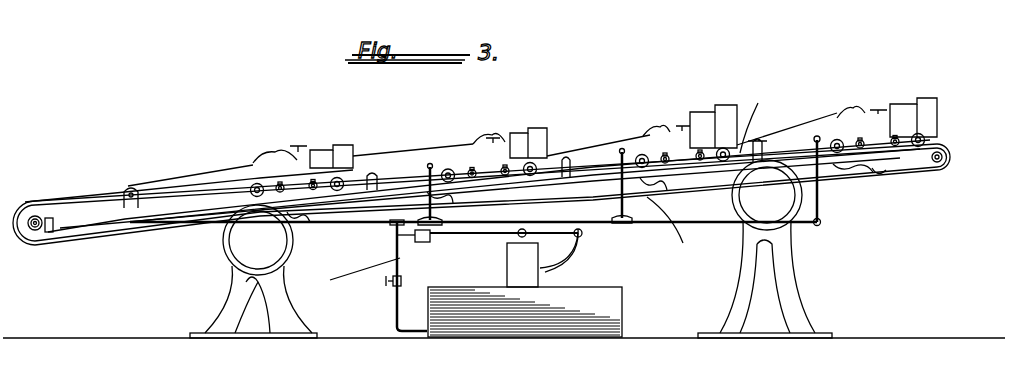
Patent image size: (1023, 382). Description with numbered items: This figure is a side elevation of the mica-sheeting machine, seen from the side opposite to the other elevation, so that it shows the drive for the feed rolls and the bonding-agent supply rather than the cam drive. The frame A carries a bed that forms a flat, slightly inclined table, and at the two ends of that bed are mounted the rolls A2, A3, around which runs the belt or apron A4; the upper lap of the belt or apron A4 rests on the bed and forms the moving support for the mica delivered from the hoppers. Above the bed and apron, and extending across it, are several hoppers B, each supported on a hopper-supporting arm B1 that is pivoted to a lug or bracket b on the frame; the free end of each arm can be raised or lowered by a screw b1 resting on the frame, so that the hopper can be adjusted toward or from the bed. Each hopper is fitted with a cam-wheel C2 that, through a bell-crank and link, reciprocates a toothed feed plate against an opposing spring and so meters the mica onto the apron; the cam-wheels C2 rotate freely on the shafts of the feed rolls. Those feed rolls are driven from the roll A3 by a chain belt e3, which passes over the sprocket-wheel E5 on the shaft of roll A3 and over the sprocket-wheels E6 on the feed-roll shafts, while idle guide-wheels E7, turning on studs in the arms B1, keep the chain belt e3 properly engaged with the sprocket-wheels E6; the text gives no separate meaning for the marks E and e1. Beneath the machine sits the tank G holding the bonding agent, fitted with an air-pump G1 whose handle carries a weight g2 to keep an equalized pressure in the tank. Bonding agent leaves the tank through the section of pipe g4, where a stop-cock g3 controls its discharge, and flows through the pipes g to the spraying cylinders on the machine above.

The frame A is at (210, 208).
The roll A2 is at (936, 164).
The roll A3 is at (50, 232).
The belt or apron A4 is at (708, 170).
The hopper B is at (340, 146).
The hopper-supporting arm B1 is at (186, 176).
The cam-wheel C2 is at (268, 152).
The lug or bracket b is at (132, 188).
The screw b1 is at (298, 145).
The hanger E is at (880, 175).
The sprocket-wheel E5 is at (30, 236).
The sprocket-wheel E6 is at (904, 186).
The idle guide-wheel E7 is at (956, 122).
The frame bar e1 is at (80, 201).
The chain belt e3 is at (215, 190).
The pipe g is at (392, 226).
The weight g2 is at (423, 243).
The stop-cock g3 is at (390, 282).
The section of pipe g4 is at (359, 277).
The tank G is at (600, 310).
The air-pump G1 is at (508, 268).